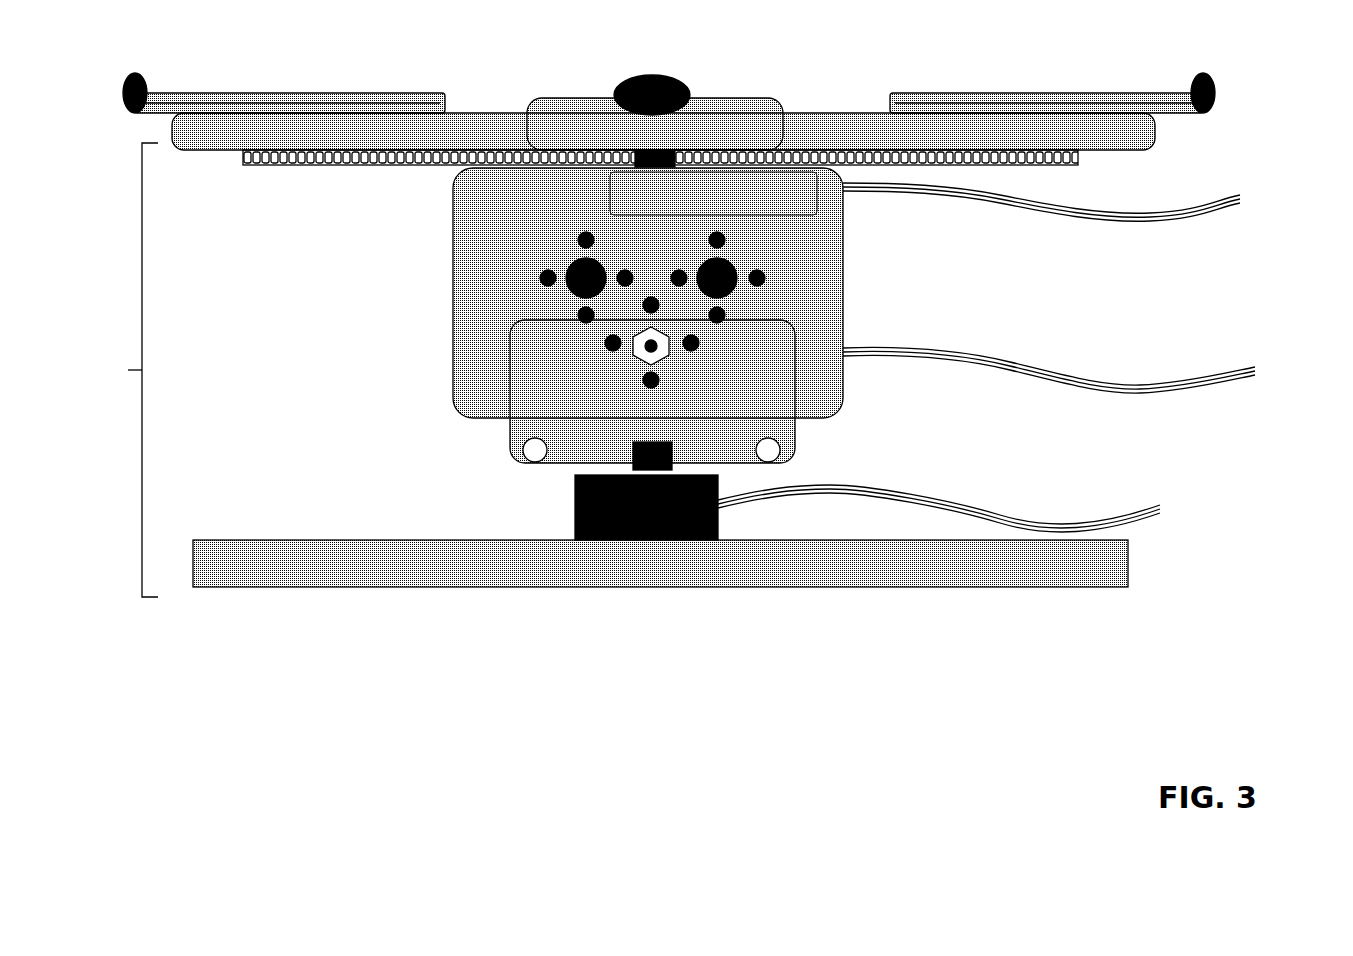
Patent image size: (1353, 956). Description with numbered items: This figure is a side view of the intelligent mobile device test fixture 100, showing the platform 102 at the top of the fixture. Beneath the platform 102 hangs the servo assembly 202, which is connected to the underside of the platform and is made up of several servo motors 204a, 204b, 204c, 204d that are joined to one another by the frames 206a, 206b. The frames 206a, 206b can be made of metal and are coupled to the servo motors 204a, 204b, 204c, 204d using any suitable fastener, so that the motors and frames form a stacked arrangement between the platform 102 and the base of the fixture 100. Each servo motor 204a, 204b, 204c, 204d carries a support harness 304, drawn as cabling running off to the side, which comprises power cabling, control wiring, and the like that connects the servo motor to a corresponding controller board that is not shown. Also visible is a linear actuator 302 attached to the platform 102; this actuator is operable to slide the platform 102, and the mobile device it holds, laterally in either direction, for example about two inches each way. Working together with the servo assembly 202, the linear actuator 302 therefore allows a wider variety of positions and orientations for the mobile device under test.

The intelligent mobile device test fixture 100 is at (124, 813).
The platform 102 is at (490, 112).
The servo assembly 202 is at (114, 370).
The servo motor 204a is at (580, 497).
The servo motor 204b is at (790, 328).
The servo motor 204c is at (651, 346).
The servo motor 204d is at (780, 208).
The frame 206a is at (520, 437).
The frame 206b is at (480, 276).
The linear actuator 302 is at (1000, 157).
The support harness 304 is at (1142, 505).